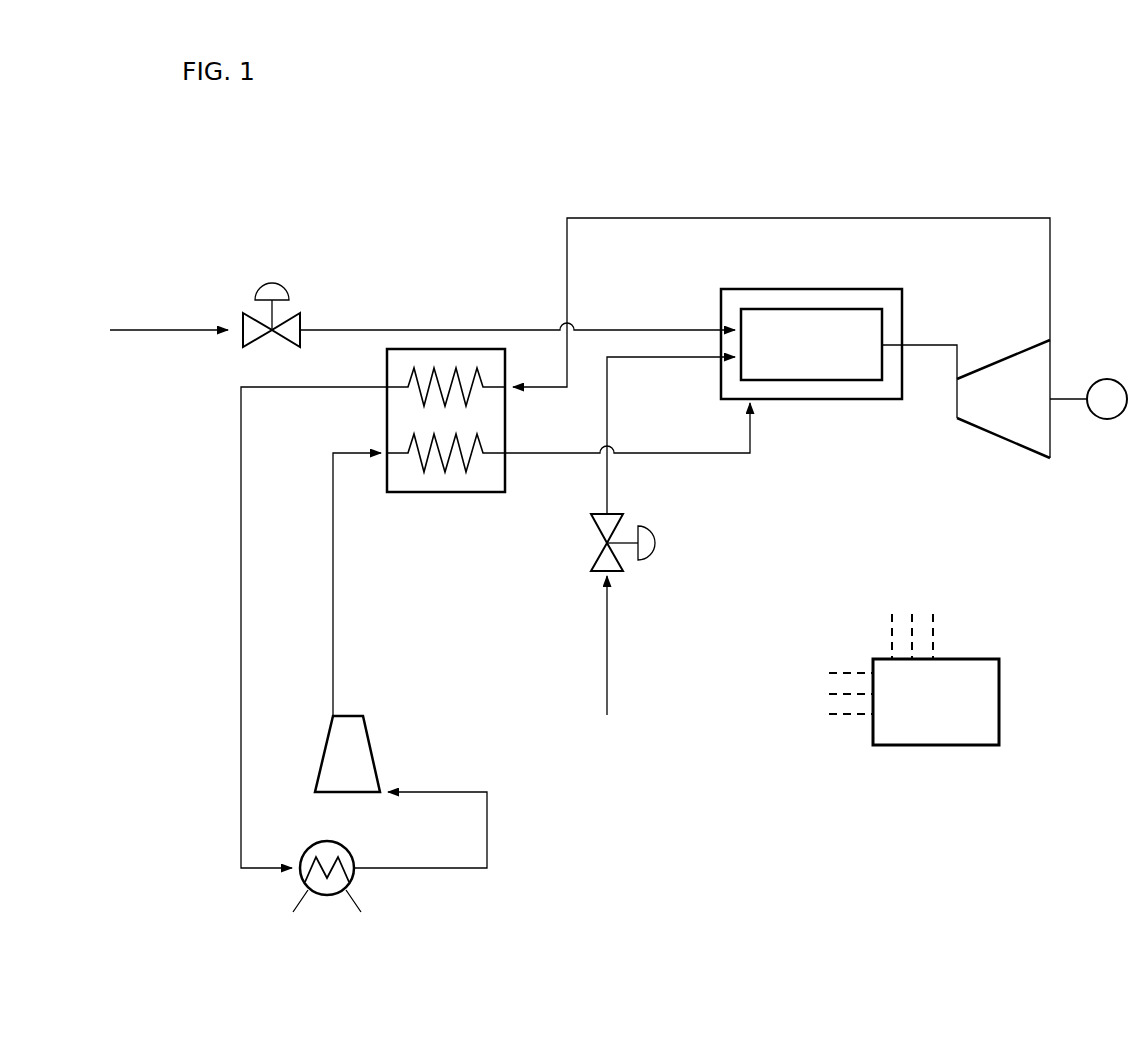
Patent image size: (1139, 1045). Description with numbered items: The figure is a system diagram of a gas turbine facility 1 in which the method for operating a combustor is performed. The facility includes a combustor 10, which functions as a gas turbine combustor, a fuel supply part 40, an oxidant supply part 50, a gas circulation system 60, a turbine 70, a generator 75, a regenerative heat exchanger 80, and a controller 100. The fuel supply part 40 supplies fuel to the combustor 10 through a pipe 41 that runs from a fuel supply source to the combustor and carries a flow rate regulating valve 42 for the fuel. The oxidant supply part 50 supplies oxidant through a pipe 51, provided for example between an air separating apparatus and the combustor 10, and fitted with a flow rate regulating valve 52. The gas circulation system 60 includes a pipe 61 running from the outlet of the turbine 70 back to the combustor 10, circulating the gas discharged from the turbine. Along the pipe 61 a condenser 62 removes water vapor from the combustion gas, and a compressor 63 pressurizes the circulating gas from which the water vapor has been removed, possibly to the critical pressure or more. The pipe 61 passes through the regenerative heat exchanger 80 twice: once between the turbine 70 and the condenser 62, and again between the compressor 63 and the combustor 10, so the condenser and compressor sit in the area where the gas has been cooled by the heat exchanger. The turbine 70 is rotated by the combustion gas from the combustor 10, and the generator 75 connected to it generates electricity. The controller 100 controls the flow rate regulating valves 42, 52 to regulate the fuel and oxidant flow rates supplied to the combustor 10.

The gas turbine facility 1 is at (430, 184).
The combustor 10 is at (846, 278).
The fuel supply part 40 is at (660, 594).
The pipe 41 is at (607, 487).
The flow rate regulating valve 42 is at (657, 543).
The oxidant supply part 50 is at (173, 308).
The pipe 51 is at (392, 330).
The flow rate regulating valve 52 is at (270, 283).
The gas circulation system 60 is at (195, 694).
The pipe 61 is at (967, 218).
The condenser 62 is at (352, 872).
The compressor 63 is at (373, 751).
The turbine 70 is at (1000, 441).
The generator 75 is at (1107, 420).
The regenerative heat exchanger 80 is at (421, 493).
The controller 100 is at (970, 659).